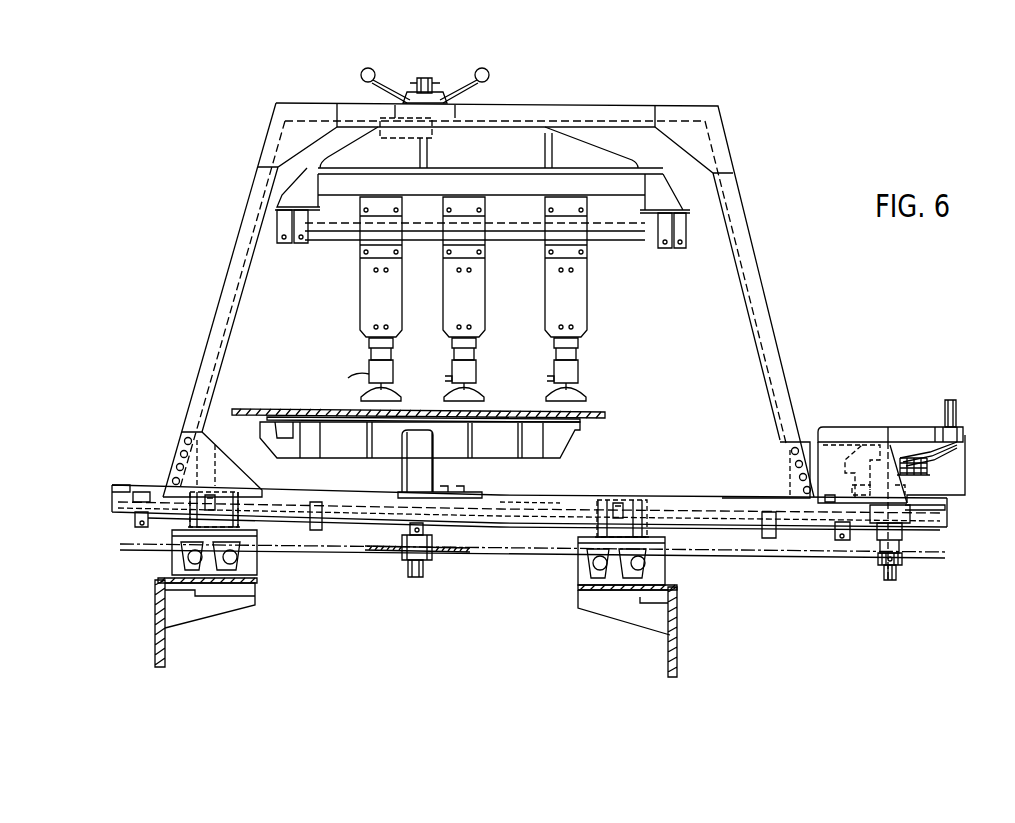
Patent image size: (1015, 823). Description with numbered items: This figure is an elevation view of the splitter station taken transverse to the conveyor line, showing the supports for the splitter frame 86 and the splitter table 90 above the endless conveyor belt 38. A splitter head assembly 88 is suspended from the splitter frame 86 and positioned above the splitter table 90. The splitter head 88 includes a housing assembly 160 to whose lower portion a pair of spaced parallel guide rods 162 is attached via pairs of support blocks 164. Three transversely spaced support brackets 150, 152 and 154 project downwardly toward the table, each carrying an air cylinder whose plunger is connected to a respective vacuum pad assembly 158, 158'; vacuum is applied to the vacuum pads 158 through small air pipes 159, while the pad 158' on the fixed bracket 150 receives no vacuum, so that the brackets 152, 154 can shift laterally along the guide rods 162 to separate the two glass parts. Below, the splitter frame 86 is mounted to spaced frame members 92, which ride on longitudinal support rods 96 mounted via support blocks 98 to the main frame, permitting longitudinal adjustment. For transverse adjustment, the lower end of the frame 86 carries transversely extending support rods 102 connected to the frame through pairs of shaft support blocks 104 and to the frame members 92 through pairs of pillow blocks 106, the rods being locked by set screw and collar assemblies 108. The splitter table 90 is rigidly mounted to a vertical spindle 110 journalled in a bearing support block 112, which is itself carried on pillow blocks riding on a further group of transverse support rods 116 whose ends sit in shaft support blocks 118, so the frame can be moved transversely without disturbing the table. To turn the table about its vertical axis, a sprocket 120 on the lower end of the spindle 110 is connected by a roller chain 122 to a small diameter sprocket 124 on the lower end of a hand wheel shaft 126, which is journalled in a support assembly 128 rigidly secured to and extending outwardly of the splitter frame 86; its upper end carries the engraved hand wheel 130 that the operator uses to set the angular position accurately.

The conveyor belt 38 is at (606, 413).
The splitter frame 86 is at (772, 292).
The splitter head assembly 88 is at (617, 152).
The splitter table 90 is at (570, 440).
The frame members 92 is at (258, 532).
The support rods 96 is at (241, 557).
The support blocks 98 is at (246, 571).
The support rods 102 is at (166, 518).
The shaft support blocks 104 is at (142, 527).
The pillow blocks 106 is at (215, 490).
The set screw and collar assemblies 108 is at (318, 530).
The vertical spindle 110 is at (424, 578).
The bearing support block 112 is at (475, 492).
The support rods 116 is at (240, 502).
The shaft support blocks 118 is at (545, 500).
The sprocket 120 is at (393, 550).
The roller chain 122 is at (748, 556).
The sprocket 124 is at (900, 558).
The hand wheel shaft 126 is at (893, 579).
The support assembly 128 is at (945, 514).
The hand wheel 130 is at (960, 430).
The support bracket 150 is at (398, 252).
The support bracket 152 is at (488, 252).
The support bracket 154 is at (590, 252).
The vacuum pad assemblies 158 is at (539, 378).
The vacuum pad assembly 158' is at (353, 378).
The air pipes 159 is at (447, 378).
The housing assembly 160 is at (667, 198).
The guide rods 162 is at (647, 238).
The support blocks 164 is at (688, 224).